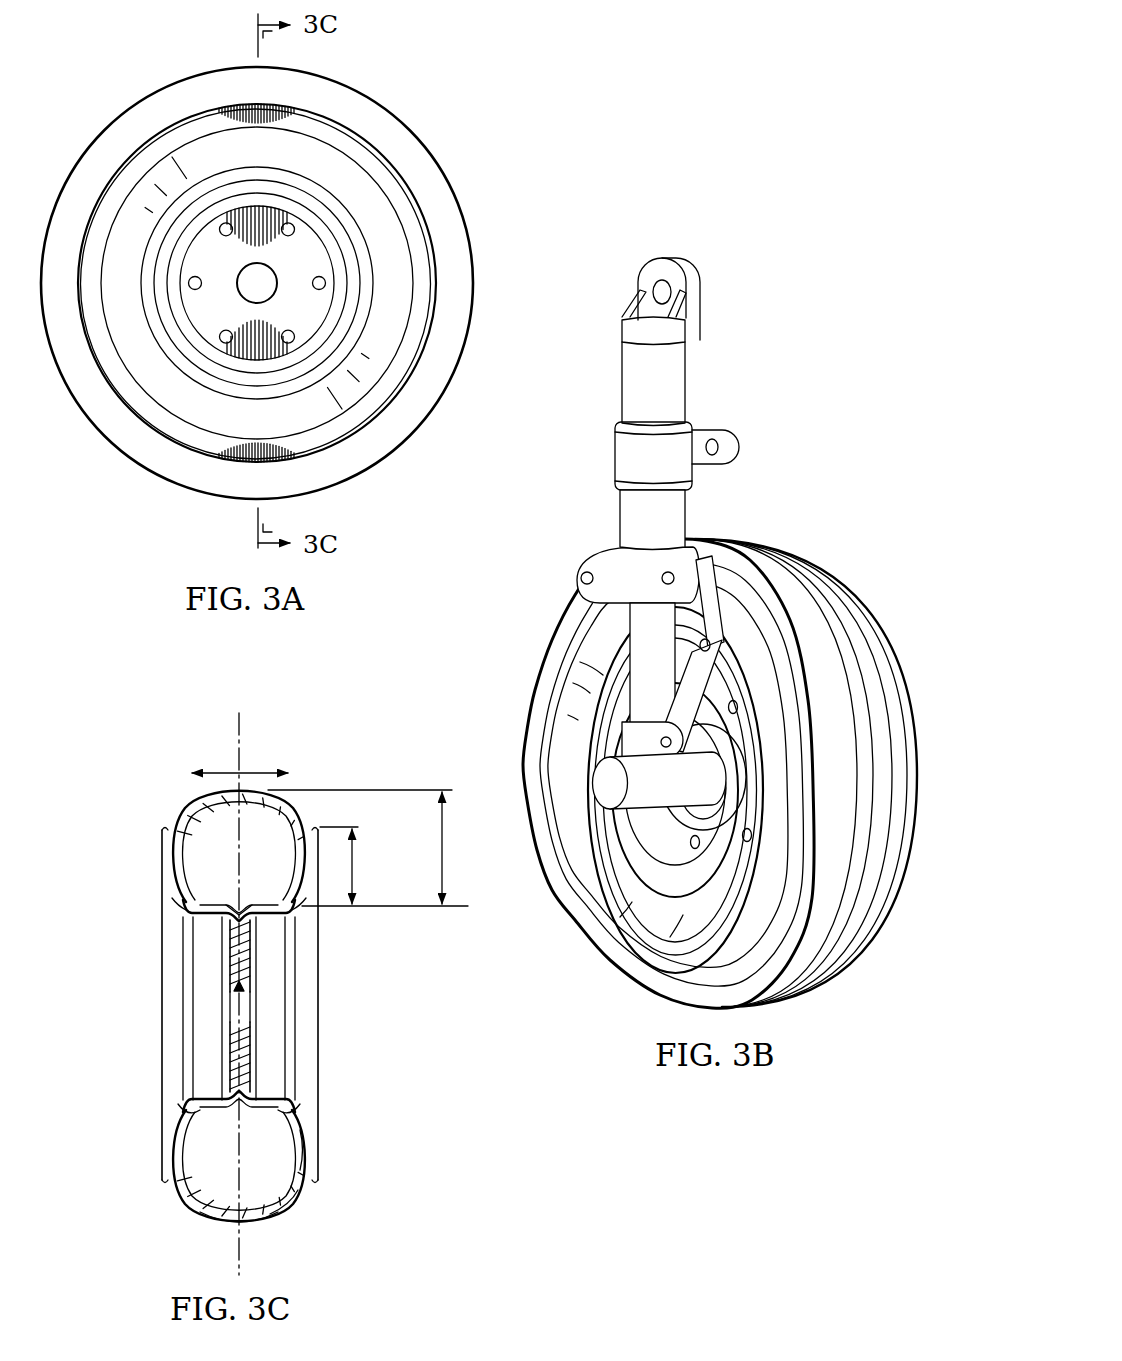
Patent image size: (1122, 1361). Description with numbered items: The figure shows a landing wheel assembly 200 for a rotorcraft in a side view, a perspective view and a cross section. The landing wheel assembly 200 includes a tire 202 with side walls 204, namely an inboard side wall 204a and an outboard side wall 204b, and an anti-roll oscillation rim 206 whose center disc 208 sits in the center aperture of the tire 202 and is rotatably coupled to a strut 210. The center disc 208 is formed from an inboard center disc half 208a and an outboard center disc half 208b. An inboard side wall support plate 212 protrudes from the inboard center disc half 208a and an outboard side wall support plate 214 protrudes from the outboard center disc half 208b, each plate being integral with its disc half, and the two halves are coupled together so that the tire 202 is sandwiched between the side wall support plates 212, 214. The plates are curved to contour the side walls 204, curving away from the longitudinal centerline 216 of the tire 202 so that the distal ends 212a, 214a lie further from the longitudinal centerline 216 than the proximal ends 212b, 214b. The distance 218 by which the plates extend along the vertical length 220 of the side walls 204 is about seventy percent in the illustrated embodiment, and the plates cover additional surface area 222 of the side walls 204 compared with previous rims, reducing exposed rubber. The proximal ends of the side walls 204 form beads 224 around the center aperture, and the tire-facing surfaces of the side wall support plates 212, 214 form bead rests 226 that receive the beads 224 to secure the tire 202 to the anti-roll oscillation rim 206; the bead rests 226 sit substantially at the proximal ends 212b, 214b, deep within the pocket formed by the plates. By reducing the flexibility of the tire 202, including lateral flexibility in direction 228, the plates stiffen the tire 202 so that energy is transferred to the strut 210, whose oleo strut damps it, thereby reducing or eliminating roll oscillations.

In FIG. 3A, the landing wheel assembly 200 is at (135, 62).
In FIG. 3B, the landing wheel assembly 200 is at (828, 492).
In FIG. 3C, the landing wheel assembly 200 is at (167, 783).
In FIG. 3A, the tire 202 is at (118, 126).
In FIG. 3B, the tire 202 is at (765, 543).
In FIG. 3C, the tire 202 is at (240, 1028).
In FIG. 3A, the side walls 204 is at (369, 283).
In FIG. 3B, the side walls 204 is at (746, 748).
In FIG. 3C, the side walls 204 is at (212, 997).
In FIG. 3B, the inboard side wall 204a is at (675, 790).
In FIG. 3C, the inboard side wall 204a is at (172, 873).
In FIG. 3A, the outboard side wall 204b is at (257, 283).
In FIG. 3C, the outboard side wall 204b is at (300, 1165).
In FIG. 3A, the anti-roll oscillation rim 206 is at (148, 432).
In FIG. 3B, the anti-roll oscillation rim 206 is at (789, 908).
In FIG. 3C, the anti-roll oscillation rim 206 is at (160, 1010).
In FIG. 3A, the center disc 208 is at (324, 210).
In FIG. 3B, the center disc 208 is at (617, 850).
In FIG. 3C, the center disc 208 is at (215, 1007).
In FIG. 3B, the inboard center disc half 208a is at (718, 847).
In FIG. 3C, the inboard center disc half 208a is at (228, 1035).
In FIG. 3A, the outboard center disc half 208b is at (310, 237).
In FIG. 3C, the outboard center disc half 208b is at (250, 1037).
In FIG. 3B, the strut 210 is at (618, 518).
In FIG. 3B, the inboard side wall support plate 212 is at (555, 756).
In FIG. 3C, the inboard side wall support plate 212 is at (170, 1160).
In FIG. 3B, the distal end of inboard side wall support plate 212a is at (797, 878).
In FIG. 3C, the distal end of inboard side wall support plate 212a is at (192, 1210).
In FIG. 3B, the proximal end of inboard side wall support plate 212b is at (637, 883).
In FIG. 3C, the proximal end of inboard side wall support plate 212b is at (180, 1103).
In FIG. 3A, the outboard side wall support plate 214 is at (152, 380).
In FIG. 3C, the outboard side wall support plate 214 is at (312, 1170).
In FIG. 3A, the distal end of outboard side wall support plate 214a is at (222, 463).
In FIG. 3C, the distal end of outboard side wall support plate 214a is at (303, 1205).
In FIG. 3A, the proximal end of outboard side wall support plate 214b is at (310, 385).
In FIG. 3C, the proximal end of outboard side wall support plate 214b is at (300, 1105).
In FIG. 3C, the longitudinal centerline 216 is at (241, 1258).
In FIG. 3C, the distance 218 is at (352, 866).
In FIG. 3C, the vertical length 220 is at (442, 852).
In FIG. 3A, the surface area 222 is at (155, 462).
In FIG. 3B, the surface area 222 is at (817, 680).
In FIG. 3C, the surface area 222 is at (172, 888).
In FIG. 3C, the beads 224 is at (215, 897).
In FIG. 3C, the bead rests 226 is at (175, 900).
In FIG. 3C, the direction 228 is at (221, 771).